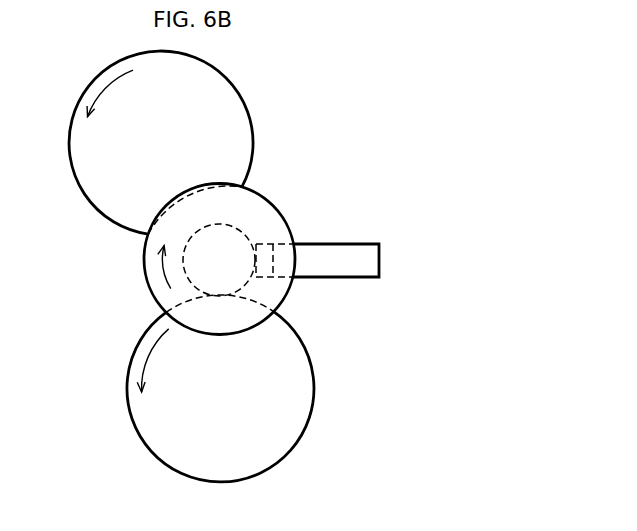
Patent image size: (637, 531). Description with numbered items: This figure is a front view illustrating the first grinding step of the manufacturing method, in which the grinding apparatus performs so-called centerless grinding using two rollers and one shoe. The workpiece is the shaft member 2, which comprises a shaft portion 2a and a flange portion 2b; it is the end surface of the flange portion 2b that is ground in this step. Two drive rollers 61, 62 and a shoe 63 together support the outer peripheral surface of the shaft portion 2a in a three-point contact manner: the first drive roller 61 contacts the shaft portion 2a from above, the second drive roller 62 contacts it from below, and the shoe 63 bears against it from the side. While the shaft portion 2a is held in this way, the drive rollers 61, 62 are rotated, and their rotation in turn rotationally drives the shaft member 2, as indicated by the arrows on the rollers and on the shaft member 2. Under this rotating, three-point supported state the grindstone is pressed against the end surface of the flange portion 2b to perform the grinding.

The shaft member 2 is at (243, 239).
The shaft portion 2a is at (233, 276).
The flange portion 2b is at (272, 222).
The drive roller 61 is at (230, 107).
The drive roller 62 is at (297, 379).
The shoe 63 is at (360, 252).